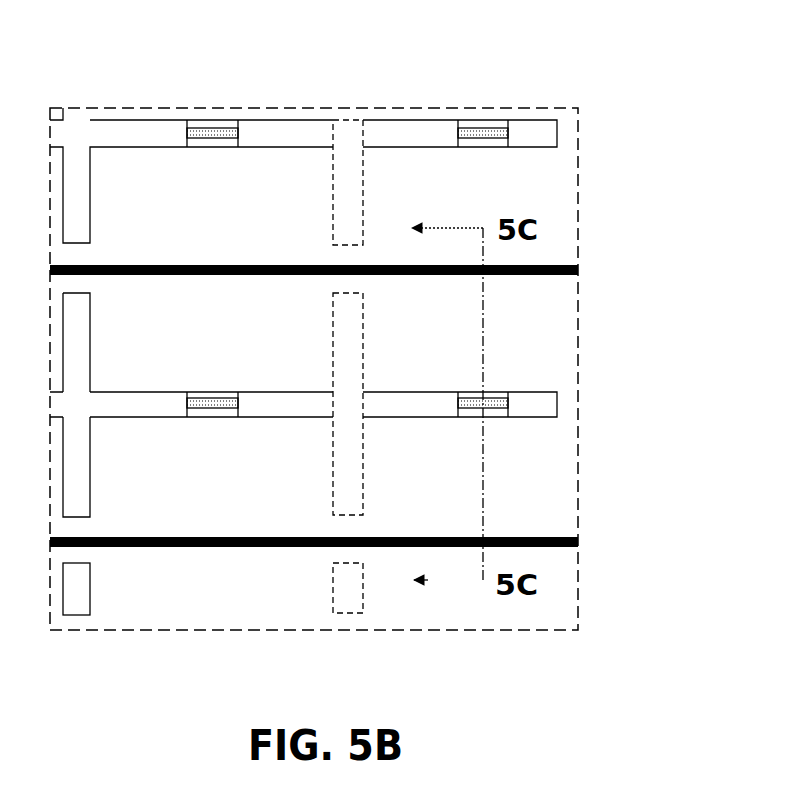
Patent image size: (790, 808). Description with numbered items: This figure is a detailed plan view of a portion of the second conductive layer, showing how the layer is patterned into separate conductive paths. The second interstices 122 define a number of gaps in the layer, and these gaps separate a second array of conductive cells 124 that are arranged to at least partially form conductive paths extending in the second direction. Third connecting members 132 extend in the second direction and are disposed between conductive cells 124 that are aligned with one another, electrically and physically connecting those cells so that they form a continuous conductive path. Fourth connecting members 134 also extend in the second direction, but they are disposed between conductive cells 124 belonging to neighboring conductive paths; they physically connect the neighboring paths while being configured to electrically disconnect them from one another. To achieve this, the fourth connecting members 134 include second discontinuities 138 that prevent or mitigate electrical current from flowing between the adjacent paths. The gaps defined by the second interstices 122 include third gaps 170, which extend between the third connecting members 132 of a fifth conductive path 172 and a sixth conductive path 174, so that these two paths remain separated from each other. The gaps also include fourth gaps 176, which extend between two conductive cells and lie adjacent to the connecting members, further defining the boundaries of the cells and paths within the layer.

The second interstices 122 is at (347, 402).
The conductive cells 124 is at (229, 352).
The third connecting members 132 is at (347, 257).
The fourth connecting members 134 is at (212, 395).
The second discontinuities 138 is at (205, 410).
The third gaps 170 is at (352, 518).
The fifth conductive path 172 is at (553, 180).
The sixth conductive path 174 is at (601, 524).
The fourth gaps 176 is at (348, 143).